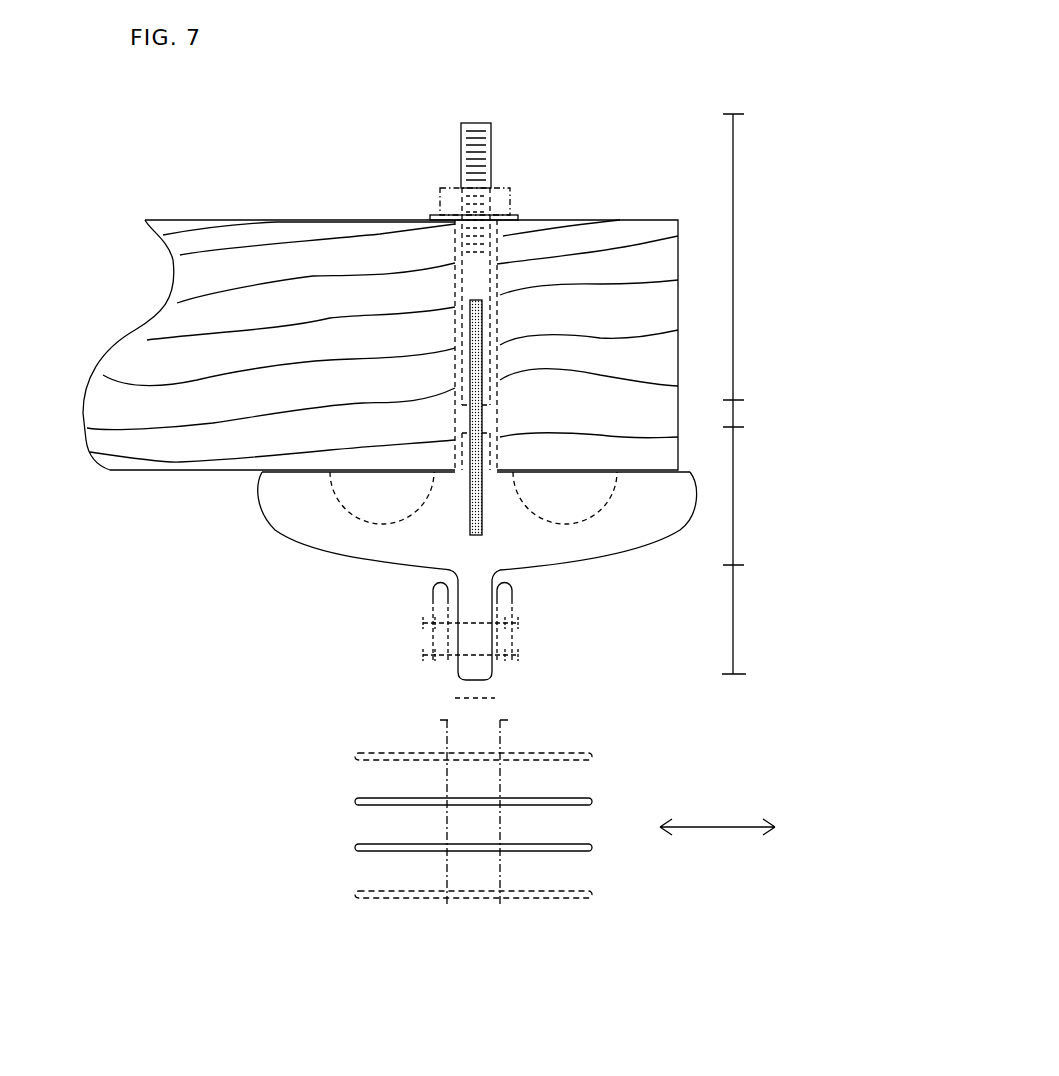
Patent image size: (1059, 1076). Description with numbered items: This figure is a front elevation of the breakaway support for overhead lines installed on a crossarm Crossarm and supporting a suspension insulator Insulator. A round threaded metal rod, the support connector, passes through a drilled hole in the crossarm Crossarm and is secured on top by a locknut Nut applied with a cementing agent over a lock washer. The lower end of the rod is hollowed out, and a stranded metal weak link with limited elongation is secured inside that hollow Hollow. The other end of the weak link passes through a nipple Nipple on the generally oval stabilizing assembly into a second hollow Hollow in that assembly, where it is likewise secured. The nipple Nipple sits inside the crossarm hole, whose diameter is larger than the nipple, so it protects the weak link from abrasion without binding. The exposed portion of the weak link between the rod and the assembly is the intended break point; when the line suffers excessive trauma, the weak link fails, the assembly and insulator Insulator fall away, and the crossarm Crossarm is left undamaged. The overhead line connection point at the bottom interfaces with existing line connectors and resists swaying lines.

The crossarm Crossarm is at (168, 304).
The locknut Nut is at (450, 181).
The hollow Hollow is at (478, 319).
The nipple Nipple is at (455, 462).
The suspension insulator Insulator is at (355, 800).